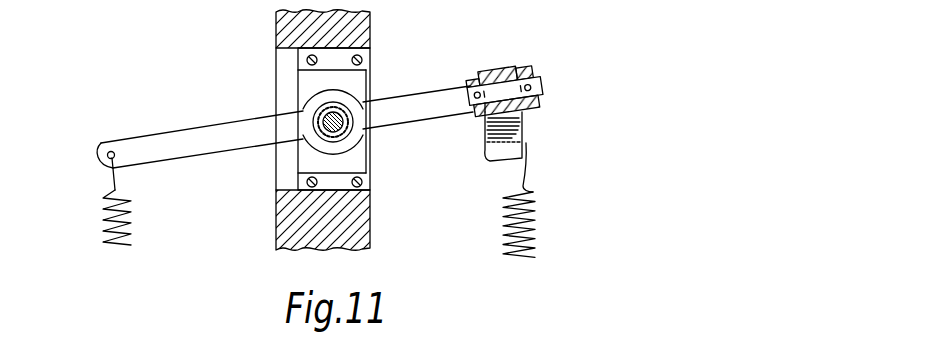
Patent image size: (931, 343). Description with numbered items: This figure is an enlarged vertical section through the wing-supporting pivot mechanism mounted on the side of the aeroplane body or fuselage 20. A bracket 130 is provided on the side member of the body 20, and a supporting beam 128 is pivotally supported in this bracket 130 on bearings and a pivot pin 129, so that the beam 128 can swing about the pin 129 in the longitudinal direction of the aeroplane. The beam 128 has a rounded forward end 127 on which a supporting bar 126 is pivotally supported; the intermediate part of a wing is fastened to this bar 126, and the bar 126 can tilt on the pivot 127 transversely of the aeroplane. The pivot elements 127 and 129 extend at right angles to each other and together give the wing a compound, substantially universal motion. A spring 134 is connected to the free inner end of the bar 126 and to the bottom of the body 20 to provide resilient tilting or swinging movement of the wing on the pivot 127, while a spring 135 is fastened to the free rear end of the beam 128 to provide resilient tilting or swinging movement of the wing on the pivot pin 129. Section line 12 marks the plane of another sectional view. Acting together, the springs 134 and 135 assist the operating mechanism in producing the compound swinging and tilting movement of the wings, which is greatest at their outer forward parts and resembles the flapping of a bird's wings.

The section line / reference plane 12 is at (89, 91).
The body or fuselage 20 is at (371, 222).
The supporting bar 126 is at (514, 127).
The rounded forward end 127 is at (541, 86).
The supporting beam 128 is at (427, 100).
The pivot pin 129 is at (330, 121).
The bracket 130 is at (360, 159).
The spring 134 is at (531, 227).
The spring 135 is at (105, 217).